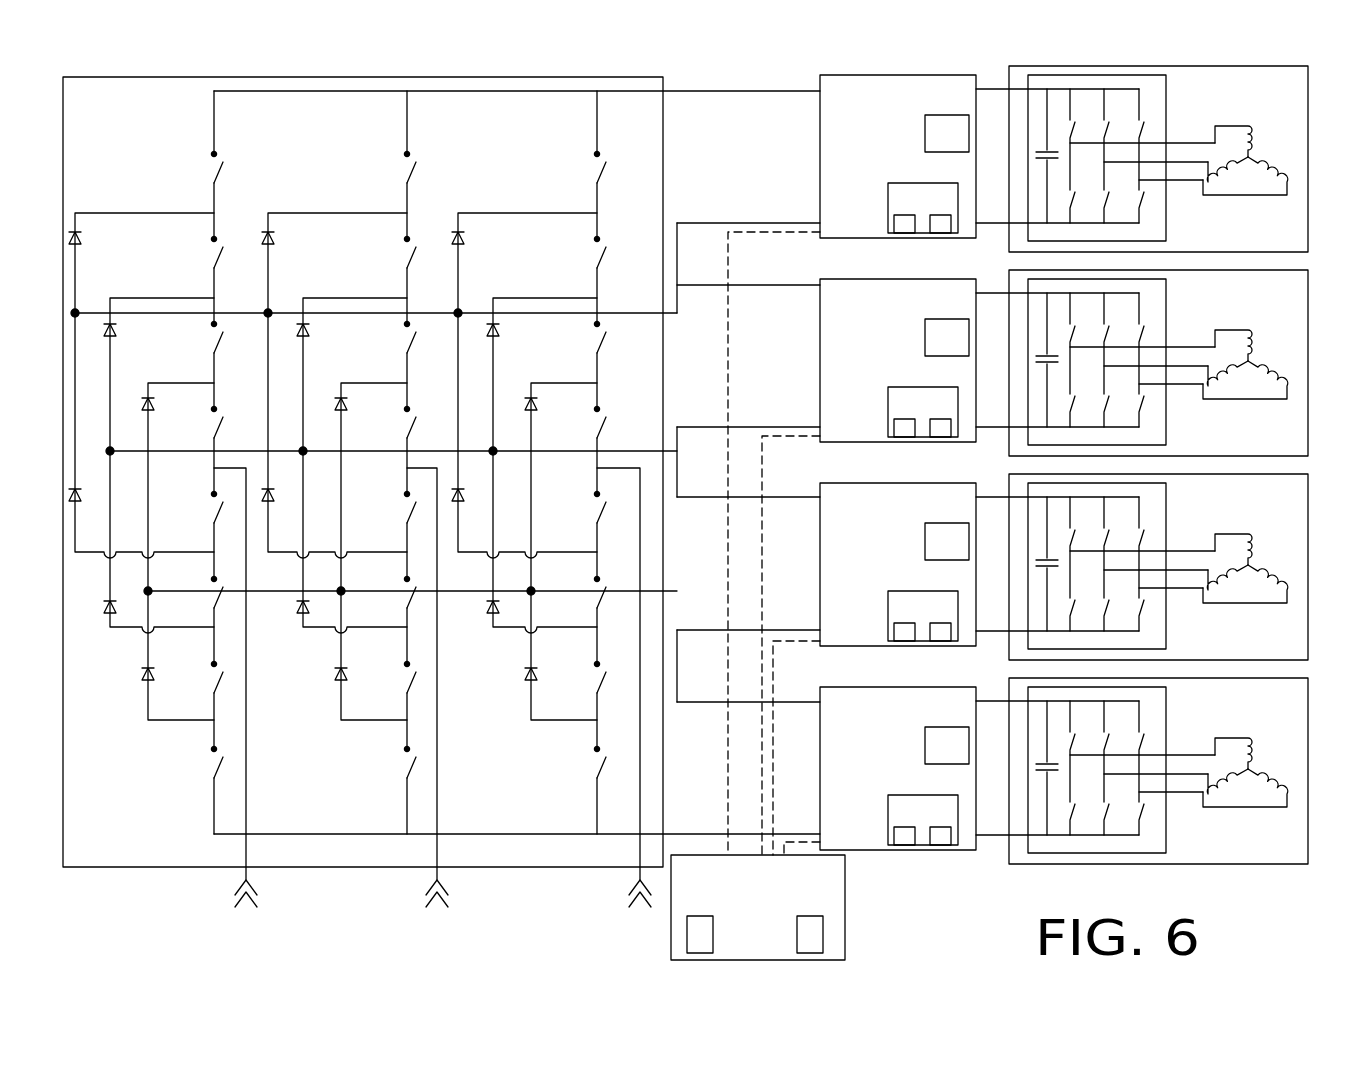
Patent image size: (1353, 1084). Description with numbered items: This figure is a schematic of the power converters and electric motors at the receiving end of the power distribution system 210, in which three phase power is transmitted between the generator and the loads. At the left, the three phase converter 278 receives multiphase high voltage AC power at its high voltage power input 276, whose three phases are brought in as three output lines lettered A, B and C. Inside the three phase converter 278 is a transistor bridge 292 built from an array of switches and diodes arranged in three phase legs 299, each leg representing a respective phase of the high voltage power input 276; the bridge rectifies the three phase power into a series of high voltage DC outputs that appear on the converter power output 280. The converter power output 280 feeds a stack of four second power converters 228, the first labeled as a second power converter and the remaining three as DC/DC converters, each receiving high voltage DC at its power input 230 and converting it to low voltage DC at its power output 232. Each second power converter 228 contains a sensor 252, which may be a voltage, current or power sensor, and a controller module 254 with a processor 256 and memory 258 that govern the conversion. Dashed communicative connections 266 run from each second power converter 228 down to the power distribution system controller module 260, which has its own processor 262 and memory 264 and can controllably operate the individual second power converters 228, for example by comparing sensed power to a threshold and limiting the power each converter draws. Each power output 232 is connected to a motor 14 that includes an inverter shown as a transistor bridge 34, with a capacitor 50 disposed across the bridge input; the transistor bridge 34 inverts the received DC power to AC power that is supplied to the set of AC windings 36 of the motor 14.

The three phase converter 278 is at (160, 146).
The transistor bridge 292 is at (357, 184).
The phase legs 299 is at (233, 460).
The high voltage power input 276 is at (420, 897).
The converter power output 280 is at (665, 86).
The power distribution system 210 is at (730, 70).
The power input 230 is at (810, 84).
The second power converter 228 is at (875, 219).
The sensor 252 is at (964, 146).
The controller module 254 is at (940, 212).
The processor 256 is at (900, 234).
The memory 258 is at (940, 234).
The communicative connections 266 is at (806, 850).
The power distribution system controller module 260 is at (767, 945).
The processor 262 is at (687, 932).
The memory 264 is at (823, 930).
The power output 232 is at (985, 92).
The transistor bridge 34 is at (1174, 88).
The capacitor 50 is at (1036, 153).
The AC windings 36 is at (1259, 150).
The motor 14 is at (1288, 237).